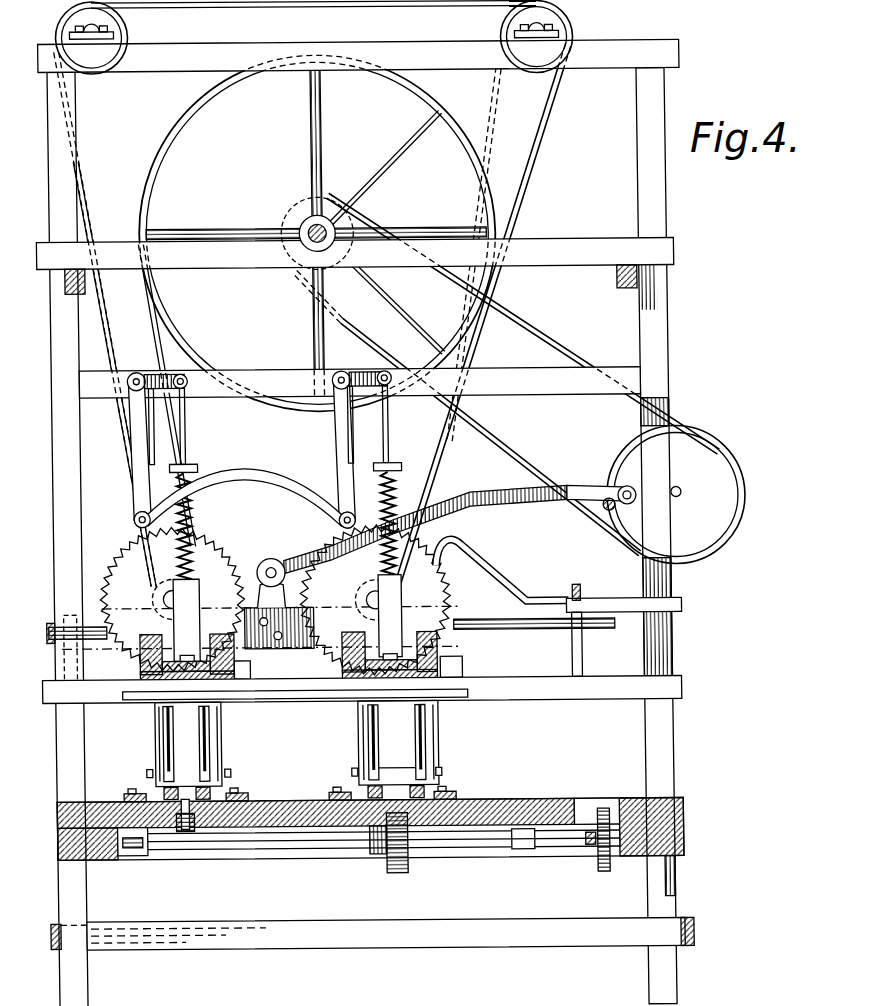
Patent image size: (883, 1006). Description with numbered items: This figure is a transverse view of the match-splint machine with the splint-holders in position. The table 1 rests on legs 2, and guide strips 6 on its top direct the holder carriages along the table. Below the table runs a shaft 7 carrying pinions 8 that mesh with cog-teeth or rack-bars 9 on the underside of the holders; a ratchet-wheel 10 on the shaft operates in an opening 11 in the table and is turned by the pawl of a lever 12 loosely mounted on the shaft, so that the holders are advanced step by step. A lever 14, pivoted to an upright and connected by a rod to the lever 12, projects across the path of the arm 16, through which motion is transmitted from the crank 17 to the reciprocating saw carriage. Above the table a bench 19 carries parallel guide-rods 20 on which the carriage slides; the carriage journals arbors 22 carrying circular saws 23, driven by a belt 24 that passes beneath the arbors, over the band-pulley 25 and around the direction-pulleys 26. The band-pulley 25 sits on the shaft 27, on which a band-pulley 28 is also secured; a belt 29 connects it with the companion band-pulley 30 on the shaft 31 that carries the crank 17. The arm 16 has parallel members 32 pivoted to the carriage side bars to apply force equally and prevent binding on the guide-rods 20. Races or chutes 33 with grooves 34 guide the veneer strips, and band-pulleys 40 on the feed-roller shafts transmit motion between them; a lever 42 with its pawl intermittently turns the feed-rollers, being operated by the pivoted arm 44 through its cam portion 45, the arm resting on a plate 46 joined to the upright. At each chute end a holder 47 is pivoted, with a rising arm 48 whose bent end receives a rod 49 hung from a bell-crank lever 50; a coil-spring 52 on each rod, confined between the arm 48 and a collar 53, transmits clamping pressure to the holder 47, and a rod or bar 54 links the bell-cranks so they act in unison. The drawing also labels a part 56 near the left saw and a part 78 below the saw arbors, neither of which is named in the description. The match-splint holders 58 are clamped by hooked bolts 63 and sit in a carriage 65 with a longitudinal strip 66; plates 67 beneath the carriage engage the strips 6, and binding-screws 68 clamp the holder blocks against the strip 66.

The table 1 is at (62, 801).
The legs 2 is at (84, 890).
The strips 6 is at (460, 790).
The shaft 7 is at (320, 842).
The pinions 8 is at (391, 862).
The cog-teeth or rack-bars 9 is at (182, 815).
The ratchet-wheel 10 is at (600, 872).
The opening 11 is at (597, 793).
The lever 12 is at (578, 848).
The lever 14 is at (604, 509).
The arm 16 is at (574, 491).
The crank 17 is at (685, 520).
The bench 19 is at (104, 698).
The guide-rods 20 is at (505, 613).
The arbors 22 is at (368, 603).
The circular saws 23 is at (212, 547).
The belt 24 is at (337, 1).
The band-pulley 25 is at (192, 110).
The direction-pulleys 26 is at (108, 26).
The shaft 27 is at (316, 240).
The band-pulley 28 is at (334, 212).
The belt 29 is at (510, 448).
The band-pulley 30 is at (712, 452).
The shaft 31 is at (680, 491).
The parallel members 32 is at (440, 516).
The races or chutes 33 is at (226, 698).
The grooves 34 is at (138, 663).
The band-pulleys 40 is at (460, 662).
The lever 42 is at (575, 592).
The pivoted arm 44 is at (603, 606).
The cam portion 45 is at (492, 566).
The plate 46 is at (670, 625).
The holder 47 is at (176, 660).
The arm 48 is at (190, 594).
The rod 49 is at (187, 422).
The bell-crank lever 50 is at (134, 434).
The coil-spring 52 is at (192, 503).
The collars 53 is at (196, 465).
The rod or bar 54 is at (266, 470).
The saw belt 56 is at (128, 548).
The match-splint holders 58 is at (210, 739).
The hooked bolts 63 is at (162, 734).
The carriage 65 is at (150, 748).
The longitudinal strip 66 is at (397, 760).
The plates 67 is at (295, 794).
The binding-screws 68 is at (224, 773).
The block 78 is at (271, 666).